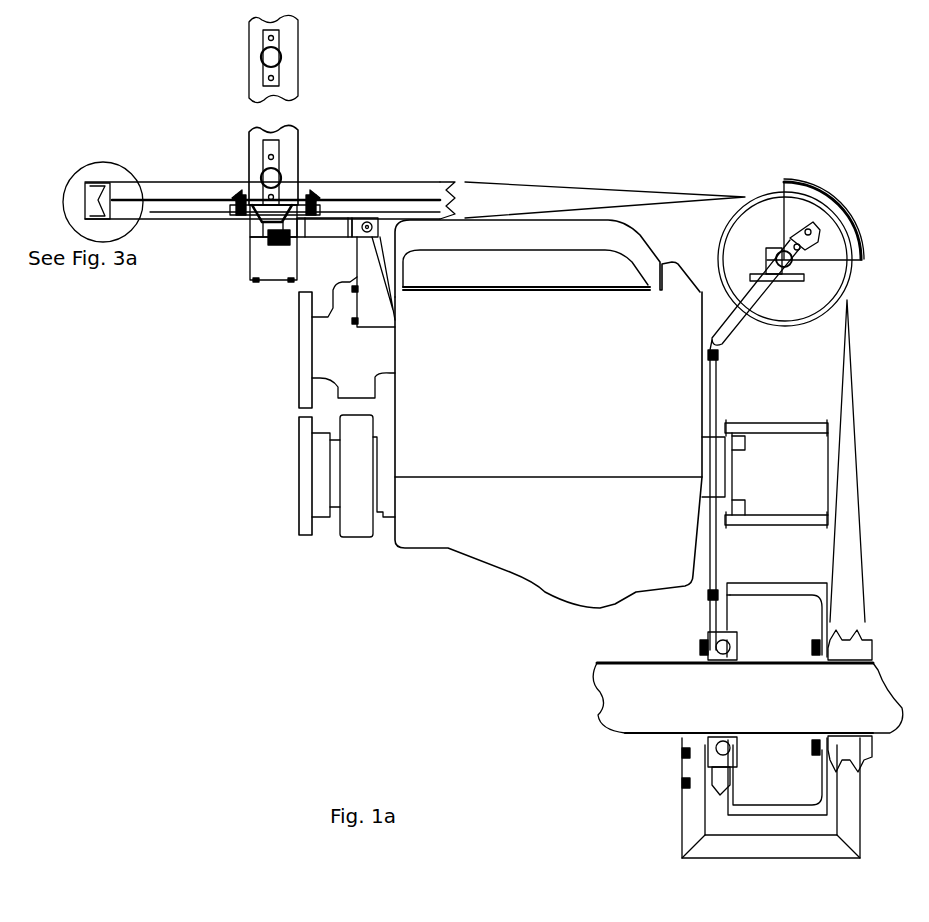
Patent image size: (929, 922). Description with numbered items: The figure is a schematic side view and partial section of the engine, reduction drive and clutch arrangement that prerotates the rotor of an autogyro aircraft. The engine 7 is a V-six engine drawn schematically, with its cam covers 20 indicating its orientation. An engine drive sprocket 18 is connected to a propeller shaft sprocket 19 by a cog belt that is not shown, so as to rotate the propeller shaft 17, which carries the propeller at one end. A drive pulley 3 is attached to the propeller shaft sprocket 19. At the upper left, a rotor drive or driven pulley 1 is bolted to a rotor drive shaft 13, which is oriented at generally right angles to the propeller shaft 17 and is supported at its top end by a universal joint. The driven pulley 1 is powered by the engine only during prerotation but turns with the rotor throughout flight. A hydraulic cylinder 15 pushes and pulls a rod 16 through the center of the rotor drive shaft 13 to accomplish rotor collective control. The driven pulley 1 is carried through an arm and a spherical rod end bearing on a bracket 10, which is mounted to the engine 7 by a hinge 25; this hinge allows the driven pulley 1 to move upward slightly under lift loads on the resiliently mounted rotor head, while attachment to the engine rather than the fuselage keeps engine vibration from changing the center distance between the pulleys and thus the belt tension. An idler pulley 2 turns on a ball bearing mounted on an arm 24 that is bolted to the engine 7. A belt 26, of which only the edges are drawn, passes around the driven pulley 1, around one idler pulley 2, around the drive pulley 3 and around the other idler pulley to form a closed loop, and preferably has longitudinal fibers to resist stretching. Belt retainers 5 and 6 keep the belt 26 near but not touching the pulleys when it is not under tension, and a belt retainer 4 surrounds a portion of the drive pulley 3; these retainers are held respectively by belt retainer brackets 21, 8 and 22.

The driven pulley 1 is at (160, 182).
The idler pulley 2 is at (852, 280).
The drive pulley 3 is at (867, 652).
The belt retainer 4 is at (868, 766).
The belt retainer 5 is at (845, 210).
The belt retainer 6 is at (85, 214).
The engine 7 is at (525, 548).
The belt retainer bracket 8 is at (193, 220).
The bracket 10 is at (345, 237).
The rotor drive shaft 13 is at (298, 172).
The hydraulic cylinder 15 is at (250, 262).
The rod 16 is at (298, 145).
The propeller shaft 17 is at (640, 738).
The engine drive sprocket 18 is at (770, 423).
The propeller shaft sprocket 19 is at (765, 583).
The cam cover 20 is at (652, 226).
The belt retainer bracket 21 is at (793, 227).
The belt retainer bracket 22 is at (747, 860).
The arm 24 is at (747, 327).
The hinge 25 is at (372, 225).
The belt 26 is at (580, 186).